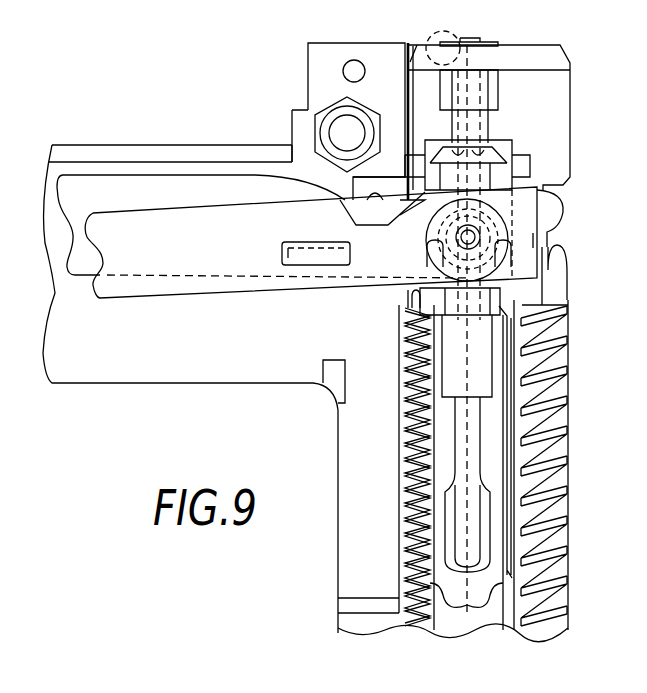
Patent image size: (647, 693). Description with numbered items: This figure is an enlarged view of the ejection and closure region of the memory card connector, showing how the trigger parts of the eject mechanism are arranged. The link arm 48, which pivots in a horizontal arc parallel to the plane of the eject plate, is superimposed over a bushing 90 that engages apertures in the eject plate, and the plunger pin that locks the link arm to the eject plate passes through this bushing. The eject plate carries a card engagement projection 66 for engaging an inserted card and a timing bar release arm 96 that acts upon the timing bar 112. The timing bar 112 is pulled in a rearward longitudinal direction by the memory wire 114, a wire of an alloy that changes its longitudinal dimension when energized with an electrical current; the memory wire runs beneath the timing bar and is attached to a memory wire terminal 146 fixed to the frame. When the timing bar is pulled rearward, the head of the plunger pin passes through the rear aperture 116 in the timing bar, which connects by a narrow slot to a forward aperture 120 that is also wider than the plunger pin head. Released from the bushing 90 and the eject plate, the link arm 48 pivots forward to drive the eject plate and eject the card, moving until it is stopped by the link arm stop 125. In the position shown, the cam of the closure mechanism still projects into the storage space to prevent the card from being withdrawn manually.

The link arm 48 is at (558, 207).
The card engagement projection 66 is at (274, 256).
The bushing 90 is at (516, 181).
The timing bar release arm 96 is at (147, 180).
The timing bar 112 is at (495, 413).
The memory wire 114 is at (527, 365).
The rear aperture 116 is at (428, 278).
The forward aperture 120 is at (438, 515).
The link arm stop 125 is at (335, 368).
The memory wire terminal 146 is at (424, 34).